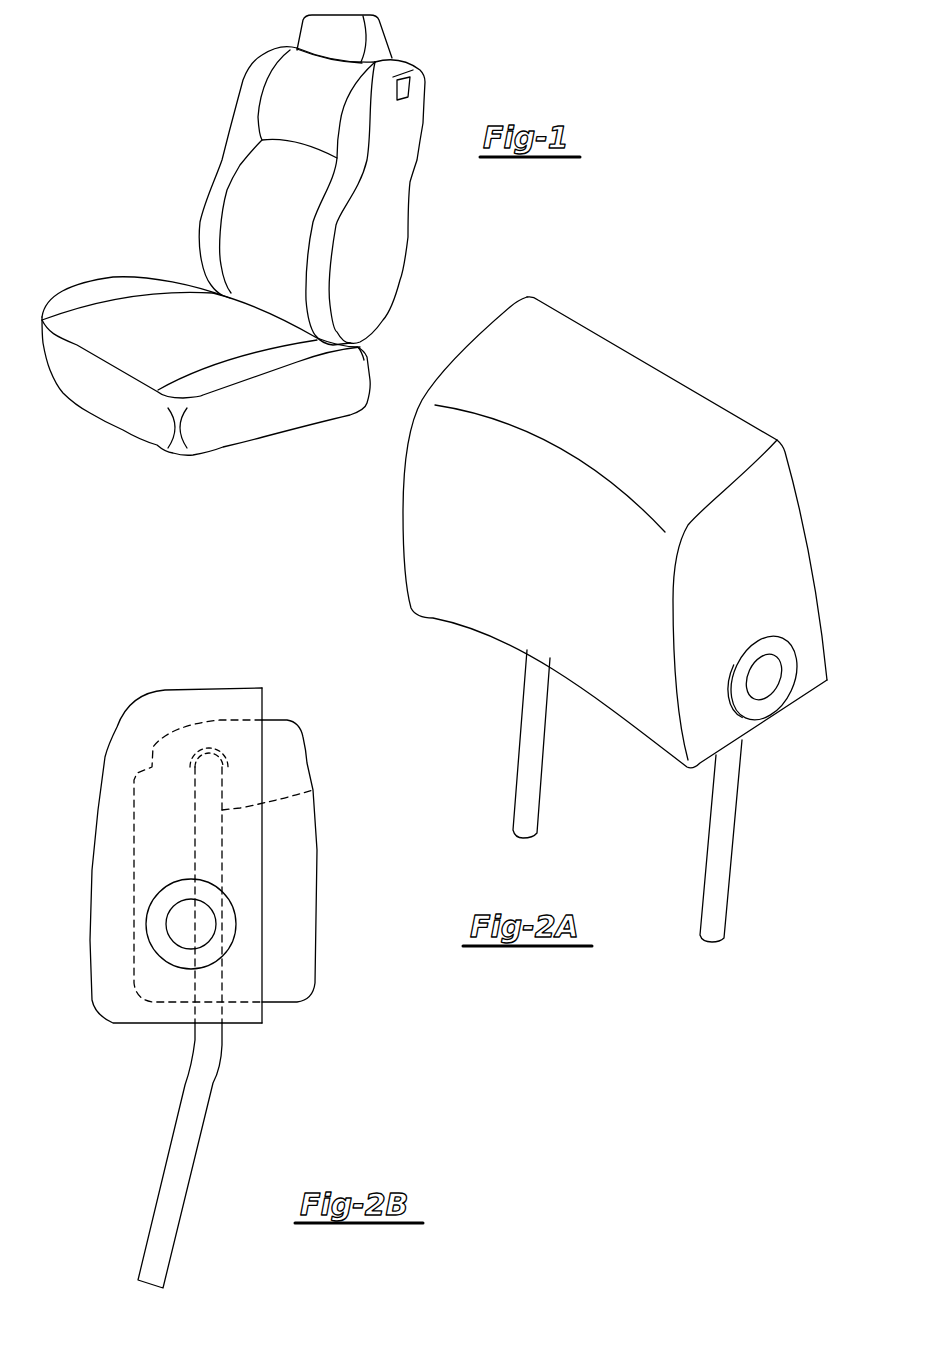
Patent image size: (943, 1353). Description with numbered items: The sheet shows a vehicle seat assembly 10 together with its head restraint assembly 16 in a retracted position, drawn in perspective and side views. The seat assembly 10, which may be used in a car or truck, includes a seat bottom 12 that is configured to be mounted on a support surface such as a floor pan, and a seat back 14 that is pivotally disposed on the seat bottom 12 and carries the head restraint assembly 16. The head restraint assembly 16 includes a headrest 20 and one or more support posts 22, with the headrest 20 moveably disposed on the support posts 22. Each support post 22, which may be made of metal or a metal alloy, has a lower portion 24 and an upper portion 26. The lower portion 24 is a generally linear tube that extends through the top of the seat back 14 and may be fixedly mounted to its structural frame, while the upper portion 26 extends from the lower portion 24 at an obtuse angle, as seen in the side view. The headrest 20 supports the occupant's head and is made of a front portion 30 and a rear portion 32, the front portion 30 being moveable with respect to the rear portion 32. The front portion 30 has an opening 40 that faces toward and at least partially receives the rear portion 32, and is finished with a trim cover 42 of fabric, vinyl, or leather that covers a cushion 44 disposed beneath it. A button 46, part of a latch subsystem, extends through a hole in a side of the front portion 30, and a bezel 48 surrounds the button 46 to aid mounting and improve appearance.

In FIG. 1, the seat assembly 10 is at (247, 53).
In FIG. 1, the seat bottom 12 is at (148, 278).
In FIG. 1, the seat back 14 is at (240, 98).
In FIG. 1, the head restraint assembly 16 is at (396, 37).
In FIG. 2A, the head restraint assembly 16 is at (691, 330).
In FIG. 2A, the headrest 20 is at (570, 322).
In FIG. 2A, the support post 22 is at (713, 798).
In FIG. 2B, the support post 22 is at (168, 1155).
In FIG. 2B, the lower portion 24 is at (210, 1100).
In FIG. 2B, the upper portion 26 is at (317, 790).
In FIG. 2B, the front portion 30 is at (104, 754).
In FIG. 2B, the rear portion 32 is at (313, 751).
In FIG. 2B, the opening 40 is at (268, 702).
In FIG. 2B, the trim cover 42 is at (193, 693).
In FIG. 2B, the cushion 44 is at (117, 817).
In FIG. 2A, the button 46 is at (765, 683).
In FIG. 2B, the button 46 is at (180, 928).
In FIG. 2A, the bezel 48 is at (767, 640).
In FIG. 2B, the bezel 48 is at (160, 893).